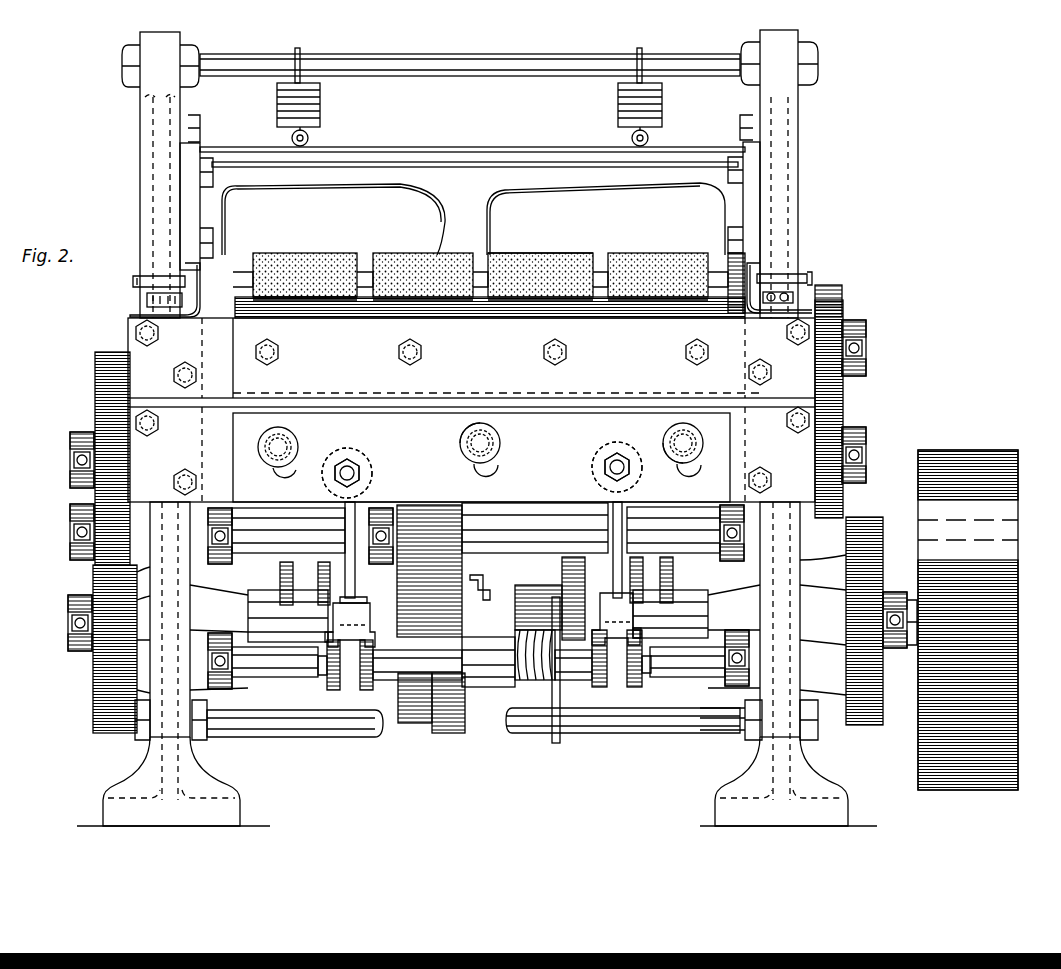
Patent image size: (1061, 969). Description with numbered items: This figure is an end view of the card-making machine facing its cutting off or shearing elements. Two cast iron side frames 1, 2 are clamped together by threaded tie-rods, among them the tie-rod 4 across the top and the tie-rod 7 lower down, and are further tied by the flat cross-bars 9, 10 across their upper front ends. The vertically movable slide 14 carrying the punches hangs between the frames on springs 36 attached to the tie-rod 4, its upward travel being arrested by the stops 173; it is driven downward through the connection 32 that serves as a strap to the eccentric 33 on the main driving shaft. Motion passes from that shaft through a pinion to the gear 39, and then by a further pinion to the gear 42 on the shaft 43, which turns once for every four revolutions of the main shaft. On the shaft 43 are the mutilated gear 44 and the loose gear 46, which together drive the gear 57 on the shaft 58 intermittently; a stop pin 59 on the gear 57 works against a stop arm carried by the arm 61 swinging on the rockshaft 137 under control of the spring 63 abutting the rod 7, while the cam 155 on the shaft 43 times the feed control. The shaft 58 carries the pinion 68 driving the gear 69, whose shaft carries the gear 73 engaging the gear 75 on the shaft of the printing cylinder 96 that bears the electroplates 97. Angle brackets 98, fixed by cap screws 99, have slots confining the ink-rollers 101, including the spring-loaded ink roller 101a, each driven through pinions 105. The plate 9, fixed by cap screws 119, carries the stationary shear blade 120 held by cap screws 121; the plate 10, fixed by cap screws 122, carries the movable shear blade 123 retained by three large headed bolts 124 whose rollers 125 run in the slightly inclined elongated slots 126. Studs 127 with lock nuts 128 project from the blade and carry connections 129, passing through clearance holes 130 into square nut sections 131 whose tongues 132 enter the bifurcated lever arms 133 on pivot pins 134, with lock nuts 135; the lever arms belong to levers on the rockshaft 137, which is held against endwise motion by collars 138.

The side frame 1 is at (788, 428).
The side frame 2 is at (173, 429).
The tie-rod 4 is at (453, 54).
The tie-rod 7 is at (680, 731).
The cross-bar 9 is at (471, 362).
The cross-bar 10 is at (471, 454).
The slide 14 is at (473, 215).
The connection 32 is at (468, 581).
The eccentric 33 is at (673, 576).
The spring 36 is at (320, 100).
The gear 39 is at (100, 690).
The gear 42 is at (862, 522).
The shaft 43 is at (268, 612).
The mutilated gear 44 is at (452, 734).
The loose gear 46 is at (418, 724).
The gear 57 is at (462, 568).
The shaft 58 is at (535, 528).
The stop pin 59 is at (483, 580).
The arm 61 is at (492, 680).
The spring 63 is at (533, 680).
The pinion 68 is at (72, 512).
The gear 69 is at (95, 385).
The gear 73 is at (835, 432).
The gear 75 is at (836, 286).
The cylinder 96 is at (238, 305).
The electroplate 97 is at (350, 308).
The angle bracket 98 is at (145, 310).
The cap screw 99 is at (140, 290).
The ink-roller 101 is at (297, 268).
The ink roller 101a is at (590, 252).
The pinion 105 is at (730, 258).
The cap screw 119 is at (165, 333).
The stationary shear blade 120 is at (499, 376).
The cap screw 121 is at (280, 349).
The cap screw 122 is at (150, 450).
The movable shear blade 123 is at (481, 457).
The large headed bolt 124 is at (462, 438).
The roller 125 is at (292, 441).
The elongated slot 126 is at (283, 470).
The stud 127 is at (362, 476).
The lock nut 128 is at (358, 468).
The connection 129 is at (345, 526).
The hole 130 is at (355, 452).
The square nut section 131 is at (484, 620).
The tongue 132 is at (350, 690).
The lever arm 133 is at (330, 637).
The pivot pin 134 is at (322, 675).
The lock nut 135 is at (360, 598).
The rockshaft 137 is at (478, 660).
The collar 138 is at (213, 636).
The cam 155 is at (566, 568).
The stop 173 is at (198, 118).